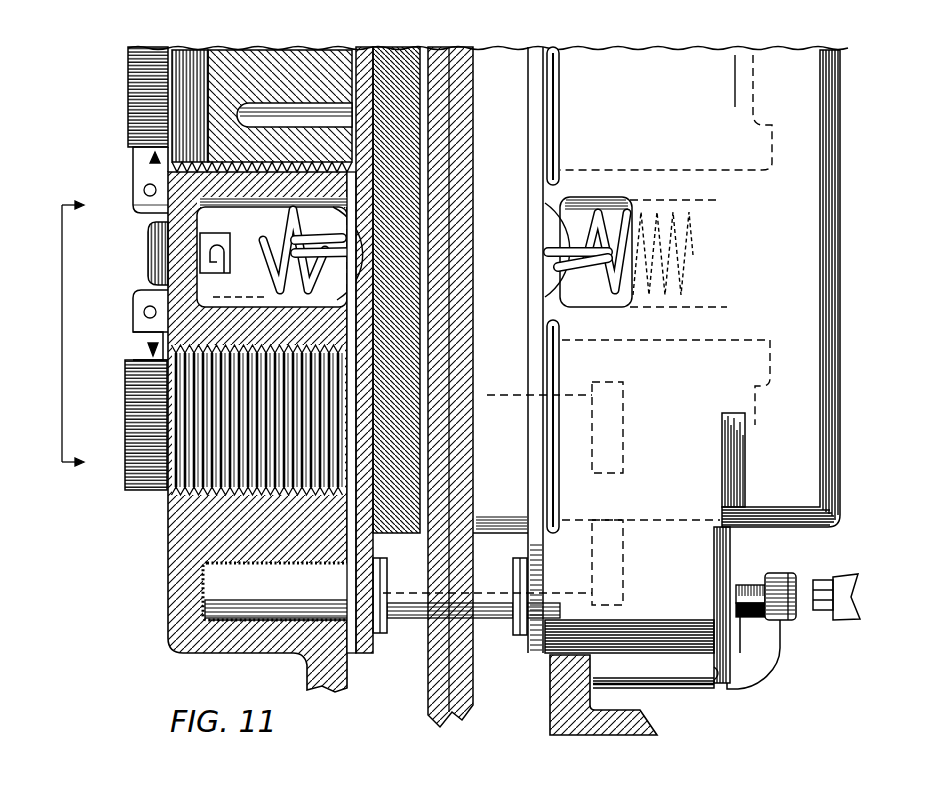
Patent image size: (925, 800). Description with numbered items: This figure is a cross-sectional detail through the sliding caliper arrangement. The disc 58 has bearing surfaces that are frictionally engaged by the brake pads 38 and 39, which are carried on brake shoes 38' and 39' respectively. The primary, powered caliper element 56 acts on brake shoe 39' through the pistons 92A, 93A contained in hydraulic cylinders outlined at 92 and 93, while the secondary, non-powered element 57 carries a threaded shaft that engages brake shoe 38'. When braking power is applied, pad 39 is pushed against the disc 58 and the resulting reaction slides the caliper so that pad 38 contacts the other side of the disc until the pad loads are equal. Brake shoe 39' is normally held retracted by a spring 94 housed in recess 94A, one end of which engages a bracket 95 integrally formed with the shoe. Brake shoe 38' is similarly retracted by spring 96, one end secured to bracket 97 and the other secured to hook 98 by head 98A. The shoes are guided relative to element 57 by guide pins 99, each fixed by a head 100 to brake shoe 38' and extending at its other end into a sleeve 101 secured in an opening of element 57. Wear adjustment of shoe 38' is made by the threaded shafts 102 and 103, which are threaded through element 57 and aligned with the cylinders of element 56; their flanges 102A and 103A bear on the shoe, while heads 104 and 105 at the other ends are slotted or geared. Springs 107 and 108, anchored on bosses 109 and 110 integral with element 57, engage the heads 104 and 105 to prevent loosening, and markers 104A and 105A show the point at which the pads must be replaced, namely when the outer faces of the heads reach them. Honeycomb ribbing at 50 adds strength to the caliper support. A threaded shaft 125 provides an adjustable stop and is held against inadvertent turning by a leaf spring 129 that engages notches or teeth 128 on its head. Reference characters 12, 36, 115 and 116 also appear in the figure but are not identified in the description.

The section line 12- 12 is at (83, 335).
The hidden fastener openings 36 is at (623, 450).
The brake pad 38 is at (406, 278).
The brake shoe 38' is at (350, 334).
The brake pad 39 is at (500, 350).
The brake shoe 39' is at (515, 350).
The honeycomb ribbing 50 is at (604, 737).
The primary caliper element 56 is at (798, 100).
The secondary caliper element 57 is at (168, 588).
The disc 58 is at (457, 55).
The hydraulic cylinder 92 is at (718, 170).
The piston 92A is at (548, 133).
The hydraulic cylinder 93 is at (716, 340).
The piston 93A is at (559, 362).
The spring 94 is at (693, 255).
The recess 94A is at (597, 293).
The bracket 95 is at (551, 283).
The spring 96 is at (283, 240).
The bracket 97 is at (340, 271).
The hook 98 is at (225, 268).
The head 98A is at (145, 250).
The guide pin 99 is at (307, 584).
The head 100 is at (381, 635).
The sleeve 101 is at (258, 625).
The threaded shaft 102 is at (197, 477).
The flange 102A is at (352, 540).
The threaded shaft 103 is at (217, 50).
The flange 103A is at (362, 180).
The head 104 is at (137, 97).
The marker 104A is at (140, 160).
The head 105 is at (130, 422).
The marker 105A is at (140, 358).
The spring 107 is at (132, 170).
The spring 108 is at (130, 335).
The boss 109 is at (140, 205).
The boss 110 is at (134, 300).
The element 115 is at (242, 799).
The element 116 is at (306, 799).
The threaded shaft 125 is at (745, 585).
The notches or teeth 128 is at (783, 620).
The leaf spring 129 is at (738, 690).